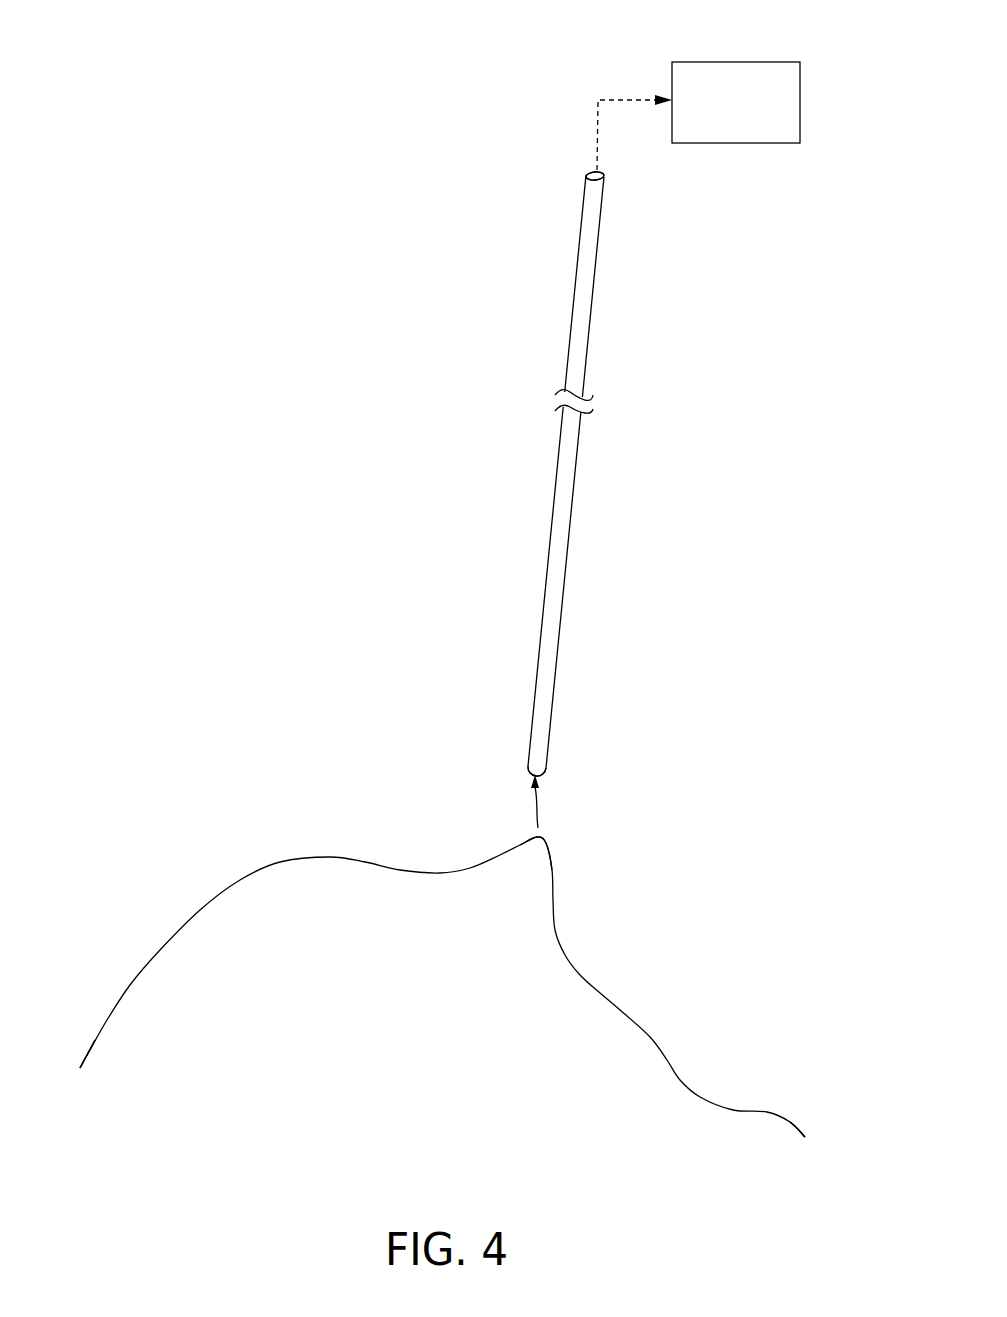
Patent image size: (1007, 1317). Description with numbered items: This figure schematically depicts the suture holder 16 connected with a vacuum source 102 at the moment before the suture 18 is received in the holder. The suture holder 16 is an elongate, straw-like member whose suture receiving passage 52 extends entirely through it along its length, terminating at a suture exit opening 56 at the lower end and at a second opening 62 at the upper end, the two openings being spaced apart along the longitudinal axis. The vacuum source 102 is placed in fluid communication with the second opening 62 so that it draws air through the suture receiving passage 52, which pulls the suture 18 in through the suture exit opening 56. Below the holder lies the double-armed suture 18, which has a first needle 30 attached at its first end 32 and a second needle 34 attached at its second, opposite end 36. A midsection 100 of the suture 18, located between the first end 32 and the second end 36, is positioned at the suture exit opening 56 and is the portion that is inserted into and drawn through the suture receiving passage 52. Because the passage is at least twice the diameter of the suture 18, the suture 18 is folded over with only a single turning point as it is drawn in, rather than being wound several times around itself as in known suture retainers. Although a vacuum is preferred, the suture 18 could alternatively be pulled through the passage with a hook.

The vacuum source 102 is at (752, 62).
The suture holder 16 is at (588, 625).
The suture receiving passage 52 is at (600, 173).
The second opening 62 is at (590, 174).
The suture exit opening 56 is at (530, 771).
The midsection 100 is at (546, 840).
The suture 18 is at (598, 993).
The first end 32 is at (80, 1067).
The first needle 30 is at (76, 1070).
The second end 36 is at (805, 1137).
The second needle 34 is at (800, 1143).